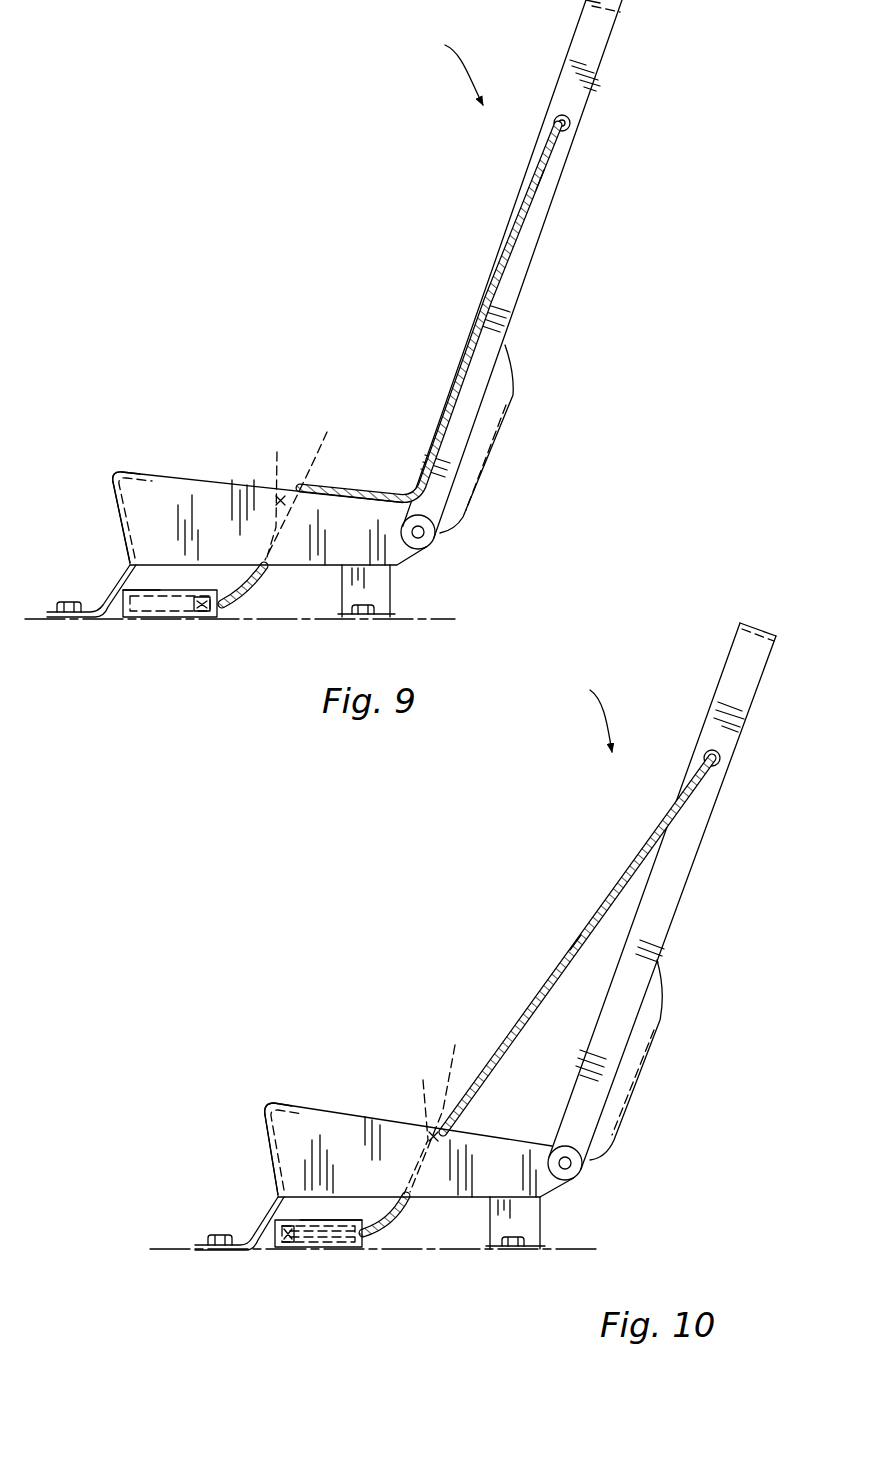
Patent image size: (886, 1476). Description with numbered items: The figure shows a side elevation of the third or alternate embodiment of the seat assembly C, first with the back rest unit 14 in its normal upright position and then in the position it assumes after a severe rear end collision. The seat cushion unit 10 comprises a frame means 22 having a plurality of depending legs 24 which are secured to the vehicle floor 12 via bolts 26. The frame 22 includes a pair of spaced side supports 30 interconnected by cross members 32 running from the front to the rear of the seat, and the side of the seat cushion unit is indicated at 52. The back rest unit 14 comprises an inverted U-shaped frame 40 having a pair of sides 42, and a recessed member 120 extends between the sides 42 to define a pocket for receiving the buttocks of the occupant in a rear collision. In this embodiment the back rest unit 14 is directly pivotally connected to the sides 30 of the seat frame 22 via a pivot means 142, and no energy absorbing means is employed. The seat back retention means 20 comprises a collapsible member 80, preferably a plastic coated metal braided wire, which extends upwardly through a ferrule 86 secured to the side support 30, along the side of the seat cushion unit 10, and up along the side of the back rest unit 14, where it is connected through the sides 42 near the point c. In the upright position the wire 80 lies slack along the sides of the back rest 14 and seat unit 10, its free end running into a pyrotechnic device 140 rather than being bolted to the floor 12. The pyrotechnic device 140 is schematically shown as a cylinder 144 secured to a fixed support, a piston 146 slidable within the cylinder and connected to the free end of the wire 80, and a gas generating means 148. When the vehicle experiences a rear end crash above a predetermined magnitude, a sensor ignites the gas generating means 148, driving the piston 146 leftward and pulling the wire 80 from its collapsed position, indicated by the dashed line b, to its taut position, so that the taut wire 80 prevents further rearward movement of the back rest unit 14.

In FIG. 9, the seat cushion unit 10 is at (150, 472).
In FIG. 10, the seat cushion unit 10 is at (298, 1103).
In FIG. 9, the vehicle floor 12 is at (447, 618).
In FIG. 10, the vehicle floor 12 is at (598, 1249).
In FIG. 9, the back rest unit 14 is at (527, 290).
In FIG. 10, the back rest unit 14 is at (689, 882).
In FIG. 9, the seat back retention means 20 is at (517, 218).
In FIG. 10, the seat back retention means 20 is at (614, 888).
In FIG. 9, the frame means 22 is at (111, 470).
In FIG. 10, the frame means 22 is at (260, 1103).
In FIG. 9, the depending legs 24 is at (110, 592).
In FIG. 10, the depending legs 24 is at (255, 1226).
In FIG. 9, the bolts 26 is at (60, 617).
In FIG. 10, the bolts 26 is at (207, 1250).
In FIG. 9, the side supports 30 is at (197, 477).
In FIG. 10, the side supports 30 is at (323, 1106).
In FIG. 9, the cross members 32 is at (118, 535).
In FIG. 10, the cross members 32 is at (272, 1160).
In FIG. 9, the back frame 40 is at (606, 60).
In FIG. 10, the back frame 40 is at (754, 703).
In FIG. 9, the sides 42 is at (533, 238).
In FIG. 10, the sides 42 is at (697, 830).
In FIG. 9, the seat side wall 52 is at (132, 506).
In FIG. 10, the seat side wall 52 is at (283, 1137).
In FIG. 9, the collapsible member 80 is at (542, 180).
In FIG. 10, the collapsible member 80 is at (573, 945).
In FIG. 9, the ferrule 86 is at (282, 491).
In FIG. 10, the ferrule 86 is at (424, 1124).
In FIG. 9, the recessed member 120 is at (513, 404).
In FIG. 10, the recessed member 120 is at (656, 1042).
In FIG. 9, the pyrotechnic device 140 is at (128, 614).
In FIG. 10, the pyrotechnic device 140 is at (277, 1250).
In FIG. 9, the pivot means 142 is at (436, 537).
In FIG. 10, the pivot means 142 is at (584, 1168).
In FIG. 9, the cylinder 144 is at (148, 590).
In FIG. 10, the cylinder 144 is at (332, 1220).
In FIG. 9, the piston 146 is at (185, 613).
In FIG. 10, the piston 146 is at (295, 1250).
In FIG. 9, the gas generating means 148 is at (212, 613).
In FIG. 10, the gas generating means 148 is at (355, 1250).
In FIG. 9, the cable attachment point c is at (572, 125).
In FIG. 10, the cable attachment point c is at (722, 760).
In FIG. 9, the cable position b is at (308, 488).
In FIG. 10, the cable position b is at (438, 1109).
In FIG. 9, the seat assembly C is at (455, 68).
In FIG. 10, the seat assembly C is at (592, 717).